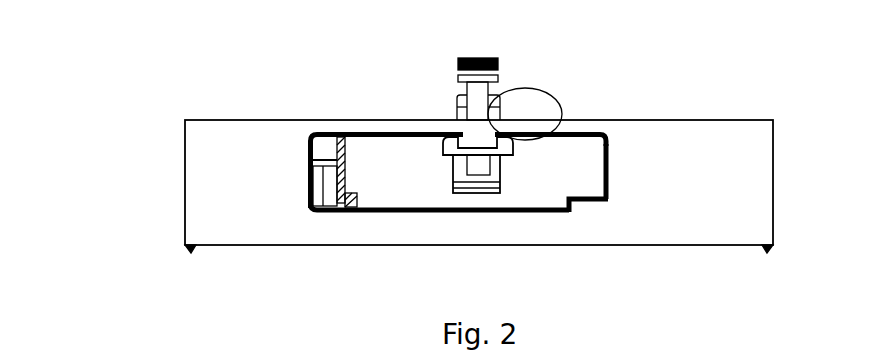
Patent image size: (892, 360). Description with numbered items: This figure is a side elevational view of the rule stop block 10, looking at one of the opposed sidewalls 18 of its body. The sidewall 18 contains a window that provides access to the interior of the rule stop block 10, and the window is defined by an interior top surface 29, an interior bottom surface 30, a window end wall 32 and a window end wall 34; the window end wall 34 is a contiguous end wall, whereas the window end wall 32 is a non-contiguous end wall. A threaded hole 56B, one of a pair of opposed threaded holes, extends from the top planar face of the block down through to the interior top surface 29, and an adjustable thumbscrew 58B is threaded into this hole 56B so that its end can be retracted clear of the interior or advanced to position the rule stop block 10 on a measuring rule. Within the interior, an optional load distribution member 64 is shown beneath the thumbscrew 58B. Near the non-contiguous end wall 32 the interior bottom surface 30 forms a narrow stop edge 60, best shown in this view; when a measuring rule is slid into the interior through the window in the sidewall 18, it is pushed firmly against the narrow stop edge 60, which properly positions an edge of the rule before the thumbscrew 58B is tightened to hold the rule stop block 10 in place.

The rule stop block 10 is at (90, 190).
The opposed sidewalls 18 is at (727, 180).
The interior top surface 29 is at (353, 133).
The interior bottom surface 30 is at (388, 213).
The window end wall 32 is at (610, 170).
The window end wall 34 is at (307, 178).
The threaded hole 56B is at (525, 109).
The adjustable thumbscrew 58B is at (484, 56).
The narrow stop edge 60 is at (572, 208).
The load distribution member 64 is at (457, 193).